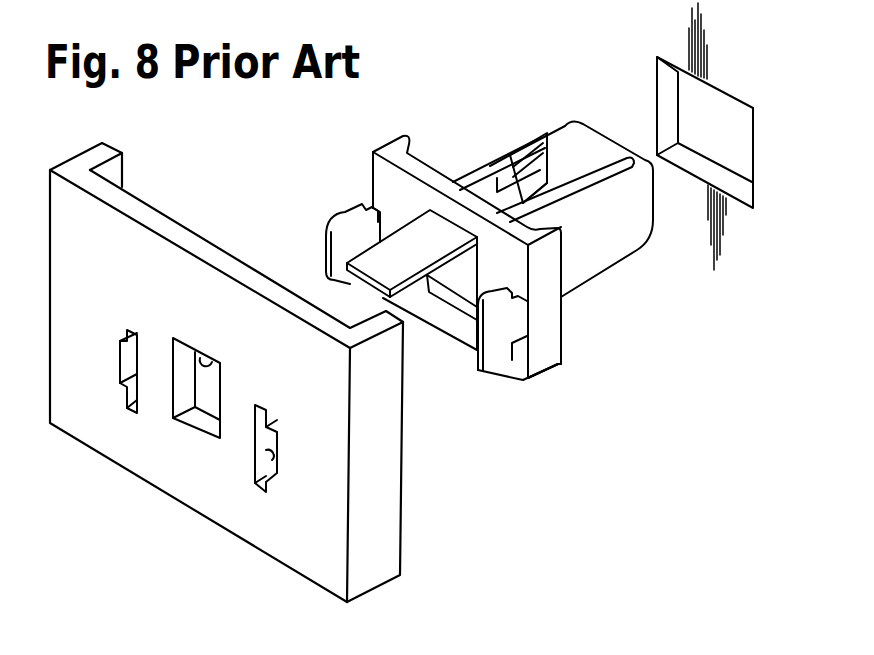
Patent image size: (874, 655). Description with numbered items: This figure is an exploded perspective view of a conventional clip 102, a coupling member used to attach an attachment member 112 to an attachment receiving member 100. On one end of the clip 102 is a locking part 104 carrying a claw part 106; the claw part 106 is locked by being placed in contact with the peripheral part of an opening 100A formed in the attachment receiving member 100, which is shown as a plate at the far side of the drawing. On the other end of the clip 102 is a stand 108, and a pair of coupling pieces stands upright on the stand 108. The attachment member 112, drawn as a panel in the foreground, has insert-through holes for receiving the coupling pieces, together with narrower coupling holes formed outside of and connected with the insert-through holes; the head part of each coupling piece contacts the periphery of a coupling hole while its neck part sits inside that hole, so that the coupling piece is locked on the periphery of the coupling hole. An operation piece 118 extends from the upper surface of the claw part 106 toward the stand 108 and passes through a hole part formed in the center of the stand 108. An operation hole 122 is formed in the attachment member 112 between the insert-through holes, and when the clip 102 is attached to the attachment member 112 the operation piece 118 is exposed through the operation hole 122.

The attachment receiving member 100 is at (727, 147).
The opening 100A is at (703, 170).
The clip 102 is at (444, 238).
The locking part 104 is at (481, 182).
The claw part 106 is at (540, 158).
The stand 108 is at (383, 175).
The attachment member 112 is at (300, 580).
The operation piece 118 is at (366, 254).
The operation hole 122 is at (210, 361).